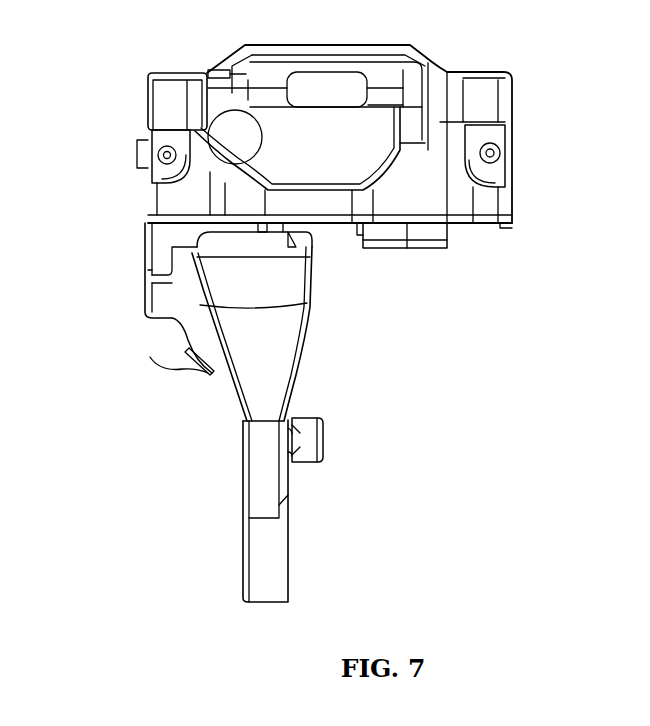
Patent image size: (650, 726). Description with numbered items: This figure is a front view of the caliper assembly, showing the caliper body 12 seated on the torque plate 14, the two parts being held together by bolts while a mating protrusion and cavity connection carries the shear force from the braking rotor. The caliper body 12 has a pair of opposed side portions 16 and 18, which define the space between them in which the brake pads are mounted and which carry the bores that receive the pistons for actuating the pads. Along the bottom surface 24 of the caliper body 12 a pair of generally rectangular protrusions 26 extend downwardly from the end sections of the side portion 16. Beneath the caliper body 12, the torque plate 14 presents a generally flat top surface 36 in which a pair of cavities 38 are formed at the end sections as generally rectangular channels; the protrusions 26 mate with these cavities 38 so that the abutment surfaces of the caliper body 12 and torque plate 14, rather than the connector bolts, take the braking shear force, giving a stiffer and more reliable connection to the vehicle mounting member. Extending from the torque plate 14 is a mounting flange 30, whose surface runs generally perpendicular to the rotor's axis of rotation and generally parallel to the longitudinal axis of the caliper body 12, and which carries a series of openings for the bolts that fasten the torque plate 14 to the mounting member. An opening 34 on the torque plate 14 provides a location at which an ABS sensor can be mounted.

The caliper body 12 is at (495, 93).
The side portion 16 is at (145, 100).
The side portion 18 is at (505, 186).
The protrusion 26 is at (145, 237).
The cavity 38 is at (143, 270).
The top surface 36 is at (310, 244).
The bottom surface 24 is at (347, 232).
The torque plate 14 is at (193, 365).
The opening 34 is at (312, 416).
The mounting flange 30 is at (252, 560).